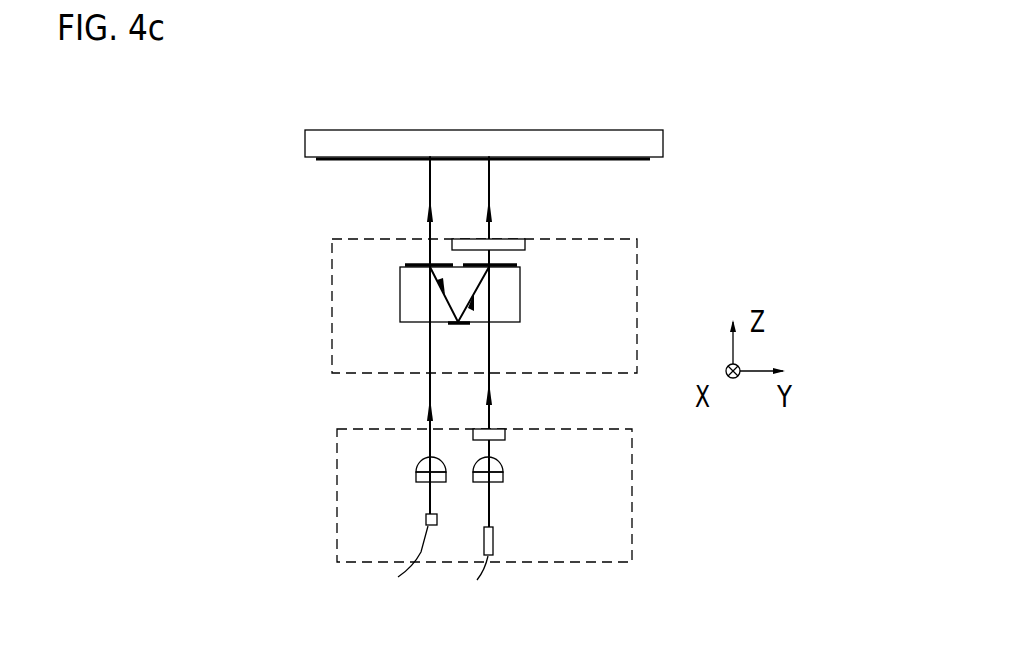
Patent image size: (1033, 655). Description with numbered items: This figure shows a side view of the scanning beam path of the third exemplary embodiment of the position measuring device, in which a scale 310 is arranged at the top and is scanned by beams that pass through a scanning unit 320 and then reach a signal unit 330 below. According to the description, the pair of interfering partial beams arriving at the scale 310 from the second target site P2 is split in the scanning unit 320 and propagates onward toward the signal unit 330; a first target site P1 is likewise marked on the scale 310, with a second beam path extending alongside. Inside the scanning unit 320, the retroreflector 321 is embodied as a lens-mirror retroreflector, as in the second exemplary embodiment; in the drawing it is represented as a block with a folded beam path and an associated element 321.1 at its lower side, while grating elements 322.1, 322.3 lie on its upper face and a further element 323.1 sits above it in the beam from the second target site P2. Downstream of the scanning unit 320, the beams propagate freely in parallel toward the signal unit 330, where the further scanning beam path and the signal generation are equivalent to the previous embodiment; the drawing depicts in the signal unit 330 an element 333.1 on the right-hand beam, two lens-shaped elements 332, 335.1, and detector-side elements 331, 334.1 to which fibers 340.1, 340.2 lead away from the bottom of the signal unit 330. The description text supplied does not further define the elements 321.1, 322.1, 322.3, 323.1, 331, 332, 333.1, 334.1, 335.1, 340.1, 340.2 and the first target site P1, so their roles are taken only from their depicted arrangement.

The scale 310 is at (675, 148).
The scanning unit 320 is at (649, 272).
The retroreflector 321 is at (518, 275).
The reflector layer 321.1 is at (458, 323).
The scanning grating 322.1 is at (417, 265).
The scanning grating 322.3 is at (507, 267).
The grating element 323.1 is at (515, 242).
The signal unit 330 is at (639, 501).
The detector element 331 is at (426, 518).
The lens 332 is at (416, 470).
The filter element 333.1 is at (498, 433).
The detector element 334.1 is at (493, 540).
The lens 335.1 is at (503, 473).
The optical fiber 340.1 is at (423, 553).
The optical fiber 340.2 is at (485, 564).
The scanning point P1 is at (427, 157).
The second target site P2 is at (487, 157).